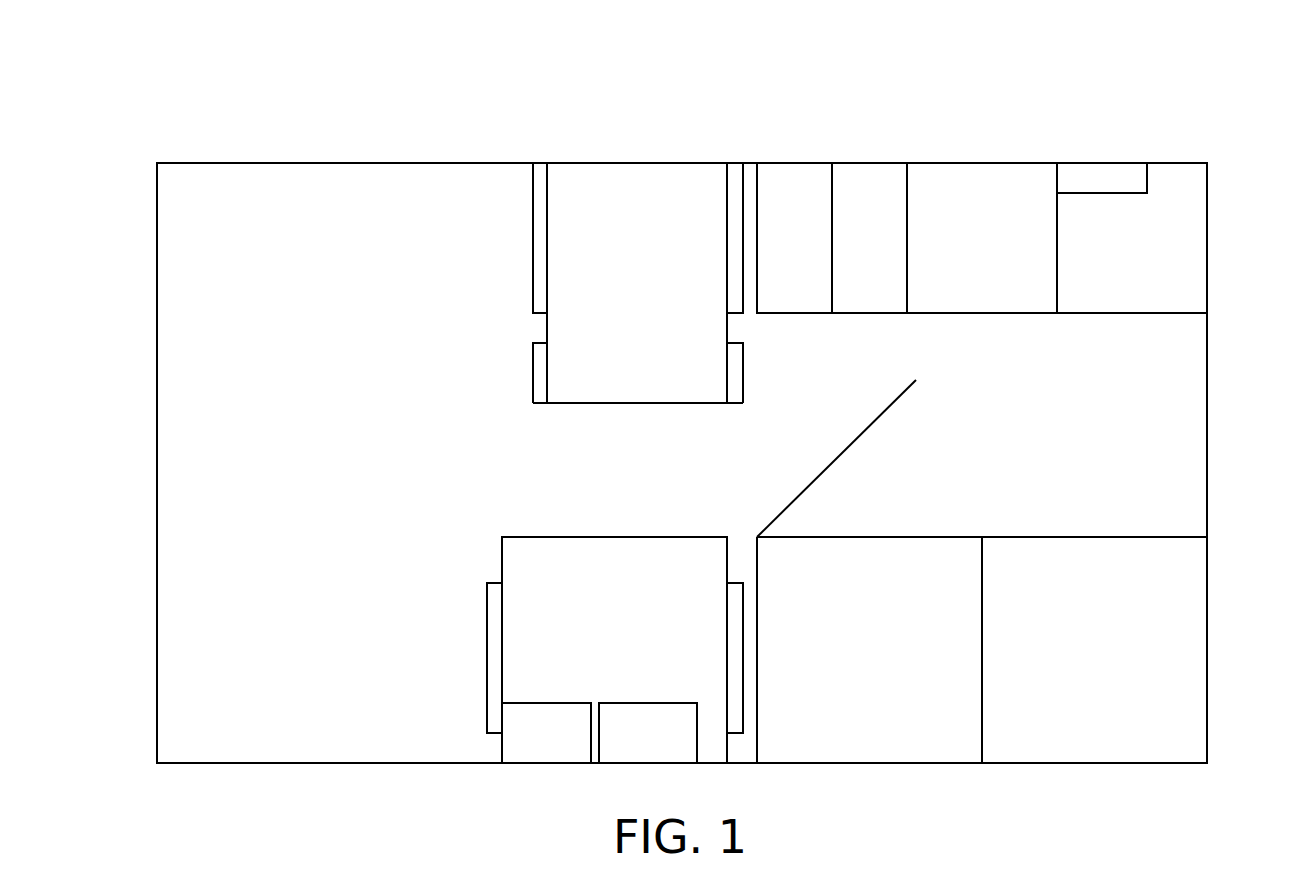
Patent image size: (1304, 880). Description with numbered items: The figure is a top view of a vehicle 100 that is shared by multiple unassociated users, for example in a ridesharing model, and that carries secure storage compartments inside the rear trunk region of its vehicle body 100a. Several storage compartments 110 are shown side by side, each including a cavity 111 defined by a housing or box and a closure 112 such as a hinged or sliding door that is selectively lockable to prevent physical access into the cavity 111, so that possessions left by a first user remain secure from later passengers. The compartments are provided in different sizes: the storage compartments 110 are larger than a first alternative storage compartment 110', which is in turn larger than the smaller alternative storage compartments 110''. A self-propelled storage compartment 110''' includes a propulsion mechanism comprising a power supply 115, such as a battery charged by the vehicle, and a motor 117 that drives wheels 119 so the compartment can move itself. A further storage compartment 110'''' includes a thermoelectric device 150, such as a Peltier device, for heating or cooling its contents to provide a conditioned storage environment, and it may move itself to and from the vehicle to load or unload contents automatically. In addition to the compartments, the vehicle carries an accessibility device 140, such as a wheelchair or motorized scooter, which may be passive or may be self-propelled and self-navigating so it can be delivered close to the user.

The vehicle 100 is at (1042, 140).
The vehicle body 100a is at (457, 163).
The storage compartment 110 is at (936, 650).
The first alternative storage compartment 110' is at (982, 238).
The alternative storage compartment 110'' is at (832, 238).
The self-propelled storage compartment 110''' is at (622, 650).
The storage compartment 110'''' is at (1132, 238).
The cavity 111 is at (955, 533).
The closure 112 is at (878, 417).
The power supply 115 is at (527, 745).
The motor 117 is at (628, 745).
The wheels 119 is at (488, 731).
The accessibility device 140 is at (617, 295).
The thermoelectric device 150 is at (1083, 188).